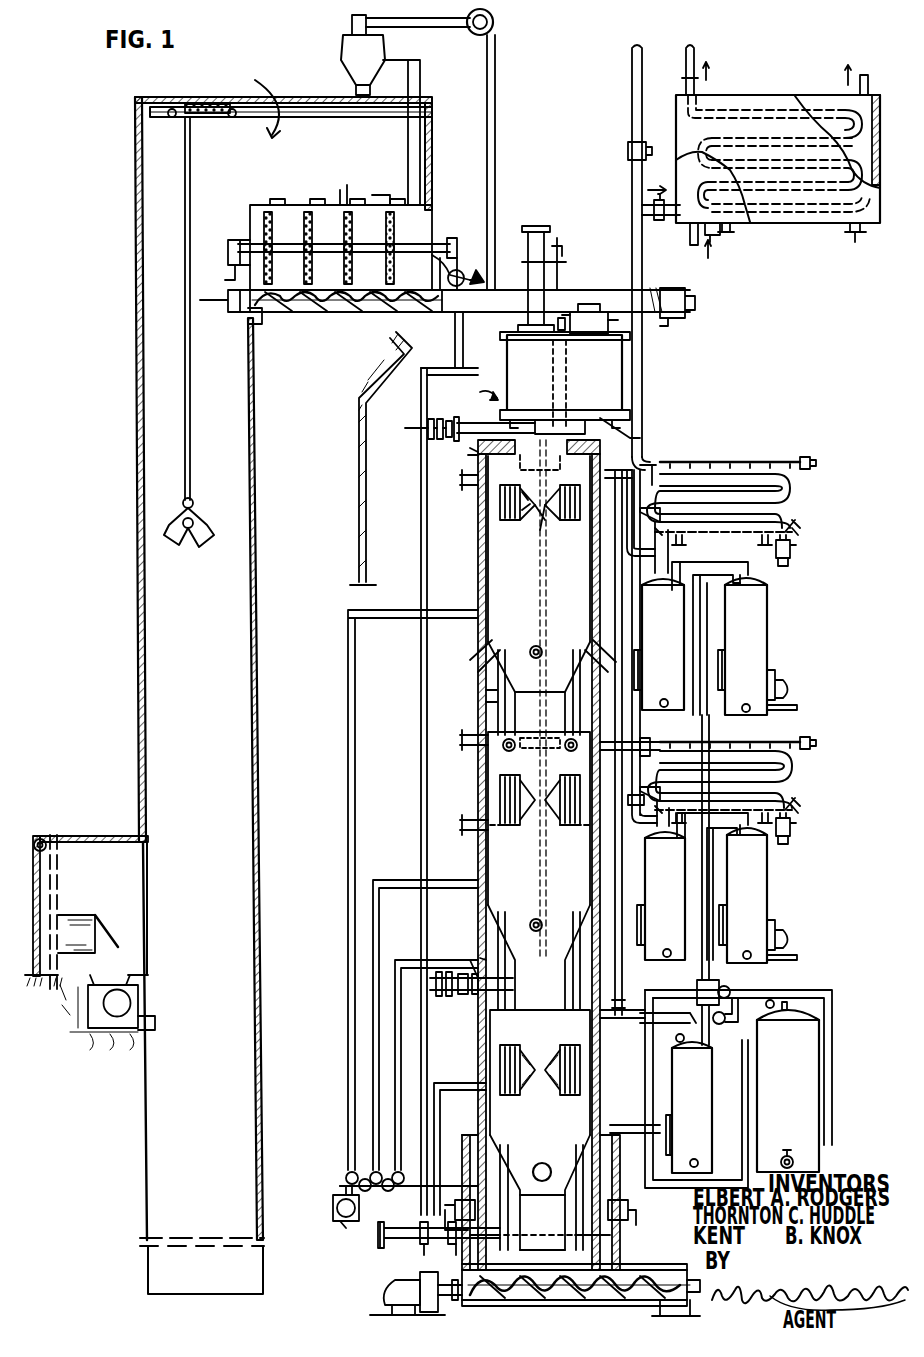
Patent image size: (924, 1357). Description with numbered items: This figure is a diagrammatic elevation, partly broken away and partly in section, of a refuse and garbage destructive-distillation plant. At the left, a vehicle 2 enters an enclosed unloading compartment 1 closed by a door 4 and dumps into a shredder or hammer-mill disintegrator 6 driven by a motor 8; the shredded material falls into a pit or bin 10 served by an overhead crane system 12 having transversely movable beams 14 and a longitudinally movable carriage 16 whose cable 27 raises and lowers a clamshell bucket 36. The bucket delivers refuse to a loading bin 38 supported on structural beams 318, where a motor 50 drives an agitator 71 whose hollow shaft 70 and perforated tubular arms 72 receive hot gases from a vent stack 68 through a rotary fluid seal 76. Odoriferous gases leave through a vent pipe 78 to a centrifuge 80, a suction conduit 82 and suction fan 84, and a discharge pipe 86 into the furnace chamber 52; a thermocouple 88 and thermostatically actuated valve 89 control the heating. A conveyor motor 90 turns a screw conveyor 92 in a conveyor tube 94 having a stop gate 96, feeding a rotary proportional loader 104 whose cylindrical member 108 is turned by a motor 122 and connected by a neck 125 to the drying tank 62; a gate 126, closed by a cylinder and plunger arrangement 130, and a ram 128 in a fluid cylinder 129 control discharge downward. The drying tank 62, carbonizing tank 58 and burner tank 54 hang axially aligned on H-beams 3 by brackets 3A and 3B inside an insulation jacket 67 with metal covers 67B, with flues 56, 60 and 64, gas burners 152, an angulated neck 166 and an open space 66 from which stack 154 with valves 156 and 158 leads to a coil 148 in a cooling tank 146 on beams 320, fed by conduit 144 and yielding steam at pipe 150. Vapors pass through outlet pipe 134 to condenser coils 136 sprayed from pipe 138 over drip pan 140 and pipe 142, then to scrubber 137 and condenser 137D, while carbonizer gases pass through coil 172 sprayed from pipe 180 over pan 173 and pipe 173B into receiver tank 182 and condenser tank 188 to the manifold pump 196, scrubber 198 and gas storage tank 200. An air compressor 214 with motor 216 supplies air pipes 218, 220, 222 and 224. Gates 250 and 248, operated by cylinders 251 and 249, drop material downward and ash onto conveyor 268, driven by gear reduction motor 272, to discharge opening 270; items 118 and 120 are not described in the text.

The refuse and garbage-unloading compartment 1 is at (90, 850).
The vehicle 2 is at (80, 914).
The closure door 4 is at (37, 885).
The shredder or hammer-mill-type disintegrator 6 is at (122, 975).
The motor 8 is at (130, 998).
The pit or bin 10 is at (252, 1266).
The overhead crane system 12 is at (256, 102).
The transversely movable beams 14 is at (172, 118).
The longitudinally movable carriage 16 is at (222, 114).
The cable 27 is at (190, 436).
The clamshell bucket 36 is at (179, 535).
The loading bin 38 is at (250, 220).
The motor 50 is at (227, 264).
The furnace chamber 52 is at (475, 1140).
The burner tank or chamber 54 is at (500, 1035).
The flues 56 is at (542, 1162).
The carbonization chamber or tank 58 is at (490, 845).
The flues 60 is at (536, 918).
The drying chamber or tank 62 is at (490, 540).
The flues 64 is at (485, 660).
The open space 66 is at (470, 453).
The insulation jacket 67 is at (478, 572).
The cylindrical retaining covers 67B is at (492, 700).
The vent stack 68 is at (463, 343).
The hollow shaft 70 is at (425, 248).
The agitator 71 is at (290, 240).
The arms 72 is at (266, 216).
The rotary fluid seal 76 is at (470, 240).
The vent pipe 78 is at (420, 75).
The centrifuge 80 is at (343, 42).
The suction conduit 82 is at (445, 29).
The suction fan 84 is at (493, 20).
The discharge pipe 86 is at (495, 80).
The heat-sensing thermocouple 88 is at (431, 270).
The thermostatically actuated valve 89 is at (492, 270).
The conveyor motor 90 is at (225, 311).
The screw conveyor 92 is at (355, 312).
The conveyor tube 94 is at (590, 284).
The stop gate 96 is at (562, 258).
The rotary proportional loader 104 is at (483, 394).
The cylindrical member 108 is at (608, 360).
The base plate 118 is at (622, 410).
The bracket 120 is at (640, 437).
The motor 122 is at (622, 318).
The neck 125 is at (470, 478).
The gate 126 is at (558, 412).
The ram 128 is at (500, 750).
The fluid cylinder 129 is at (544, 240).
The fluid actuated cylinder and plunger arrangement 130 is at (428, 440).
The vapor outlet pipe 134 is at (632, 475).
The condenser coils 136 is at (795, 484).
The scrubber 137 is at (671, 631).
The condenser 137D is at (765, 612).
The pipe 138 is at (740, 462).
The drip pan 140 is at (798, 530).
The pipe 142 is at (788, 562).
The conduit 144 is at (709, 253).
The closed heat exchange cooling tank 146 is at (848, 222).
The coil 148 is at (820, 105).
The pipe 150 is at (866, 75).
The gas burners 152 is at (470, 675).
The stack 154 is at (652, 385).
The valve 156 is at (628, 150).
The valve 158 is at (642, 210).
The angulated neck 166 is at (522, 713).
The condenser coil 172 is at (796, 762).
The water-receiving or drip pan 173 is at (798, 810).
The pipe 173B is at (788, 840).
The pipe 180 is at (745, 742).
The receiver tank 182 is at (676, 893).
The condenser tank 188 is at (765, 882).
The manifold pump 196 is at (720, 986).
The scrubber 198 is at (702, 1106).
The gas storage tank 200 is at (808, 1058).
The air compressor 214 is at (335, 1195).
The motor 216 is at (346, 1235).
The air pipe 218 is at (460, 1072).
The air pipe 220 is at (395, 1115).
The air pipes 222 is at (373, 1082).
The air pipe / rotary fluid seal 224 is at (348, 1048).
The gate 248 is at (602, 1178).
The fluid actuated cylinder 249 is at (400, 1228).
The gate 250 is at (538, 1005).
The fluid actuated cylinder 251 is at (445, 978).
The conveyor 268 is at (548, 1300).
The discharge opening 270 is at (672, 1318).
The gear reduction motor 272 is at (390, 1290).
The structural beams 318 is at (262, 318).
The beams 320 is at (732, 232).
The H-beams 3 is at (595, 450).
The support brackets 3A is at (554, 530).
The support brackets 3B is at (540, 487).